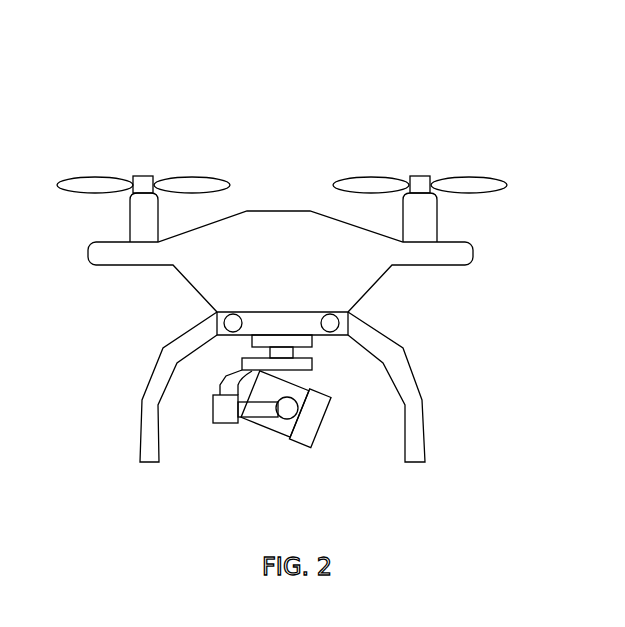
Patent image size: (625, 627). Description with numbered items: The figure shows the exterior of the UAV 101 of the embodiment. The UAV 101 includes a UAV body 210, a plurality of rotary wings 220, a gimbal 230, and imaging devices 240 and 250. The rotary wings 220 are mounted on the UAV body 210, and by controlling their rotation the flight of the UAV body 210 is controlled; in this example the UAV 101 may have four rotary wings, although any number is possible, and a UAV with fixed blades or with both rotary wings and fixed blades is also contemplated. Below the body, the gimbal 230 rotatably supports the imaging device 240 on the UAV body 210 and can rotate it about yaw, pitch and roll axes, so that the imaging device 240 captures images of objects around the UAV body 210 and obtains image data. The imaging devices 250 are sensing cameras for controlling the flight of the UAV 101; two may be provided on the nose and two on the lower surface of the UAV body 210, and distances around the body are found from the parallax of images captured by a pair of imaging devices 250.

The UAV 101 is at (282, 259).
The UAV body 210 is at (277, 222).
The rotary wings 220 is at (143, 175).
The gimbal 230 is at (217, 387).
The imaging device 240 is at (280, 423).
The imaging devices 250 is at (227, 347).